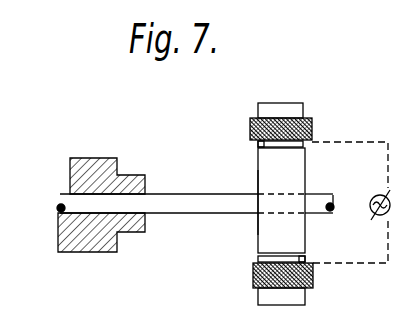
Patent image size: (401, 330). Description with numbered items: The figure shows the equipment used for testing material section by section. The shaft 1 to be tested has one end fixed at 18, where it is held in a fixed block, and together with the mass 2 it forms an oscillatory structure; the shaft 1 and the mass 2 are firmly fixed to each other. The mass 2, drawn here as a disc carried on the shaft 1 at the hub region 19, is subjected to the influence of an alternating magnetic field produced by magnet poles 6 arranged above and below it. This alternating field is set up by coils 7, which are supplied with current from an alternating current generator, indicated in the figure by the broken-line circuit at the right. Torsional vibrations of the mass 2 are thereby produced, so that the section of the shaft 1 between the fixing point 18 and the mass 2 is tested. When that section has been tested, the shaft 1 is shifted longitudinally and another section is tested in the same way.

The shaft 1 is at (193, 197).
The mass 2 is at (266, 238).
The magnet pole 6 is at (258, 144).
The coil 7 is at (250, 121).
The fixing point of the shaft 18 is at (149, 191).
The hub 19 is at (258, 194).